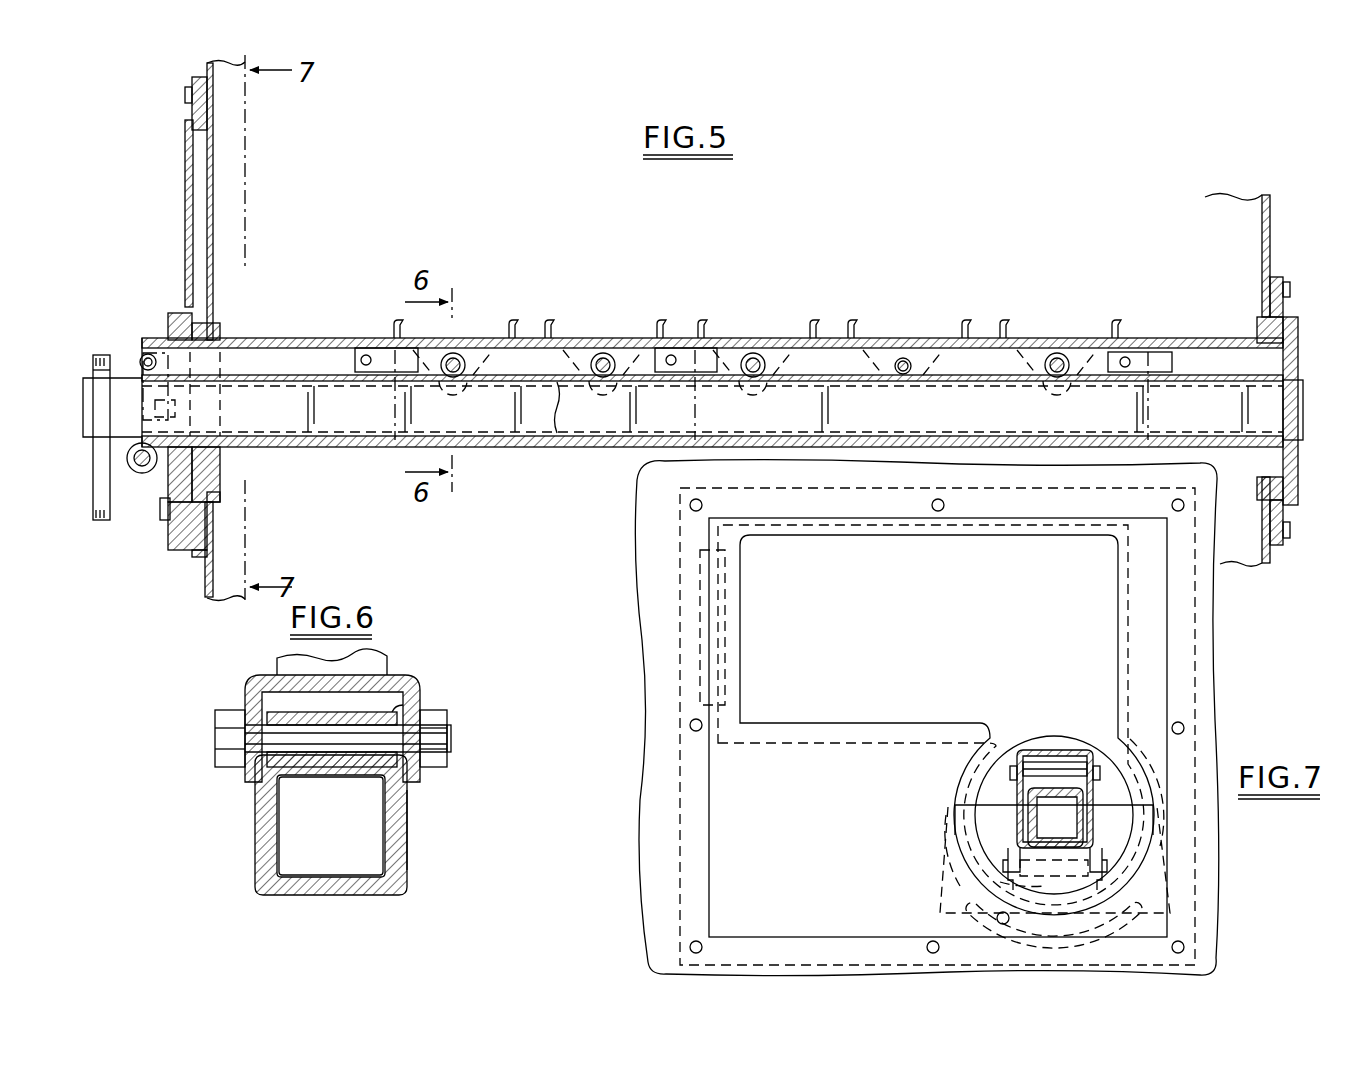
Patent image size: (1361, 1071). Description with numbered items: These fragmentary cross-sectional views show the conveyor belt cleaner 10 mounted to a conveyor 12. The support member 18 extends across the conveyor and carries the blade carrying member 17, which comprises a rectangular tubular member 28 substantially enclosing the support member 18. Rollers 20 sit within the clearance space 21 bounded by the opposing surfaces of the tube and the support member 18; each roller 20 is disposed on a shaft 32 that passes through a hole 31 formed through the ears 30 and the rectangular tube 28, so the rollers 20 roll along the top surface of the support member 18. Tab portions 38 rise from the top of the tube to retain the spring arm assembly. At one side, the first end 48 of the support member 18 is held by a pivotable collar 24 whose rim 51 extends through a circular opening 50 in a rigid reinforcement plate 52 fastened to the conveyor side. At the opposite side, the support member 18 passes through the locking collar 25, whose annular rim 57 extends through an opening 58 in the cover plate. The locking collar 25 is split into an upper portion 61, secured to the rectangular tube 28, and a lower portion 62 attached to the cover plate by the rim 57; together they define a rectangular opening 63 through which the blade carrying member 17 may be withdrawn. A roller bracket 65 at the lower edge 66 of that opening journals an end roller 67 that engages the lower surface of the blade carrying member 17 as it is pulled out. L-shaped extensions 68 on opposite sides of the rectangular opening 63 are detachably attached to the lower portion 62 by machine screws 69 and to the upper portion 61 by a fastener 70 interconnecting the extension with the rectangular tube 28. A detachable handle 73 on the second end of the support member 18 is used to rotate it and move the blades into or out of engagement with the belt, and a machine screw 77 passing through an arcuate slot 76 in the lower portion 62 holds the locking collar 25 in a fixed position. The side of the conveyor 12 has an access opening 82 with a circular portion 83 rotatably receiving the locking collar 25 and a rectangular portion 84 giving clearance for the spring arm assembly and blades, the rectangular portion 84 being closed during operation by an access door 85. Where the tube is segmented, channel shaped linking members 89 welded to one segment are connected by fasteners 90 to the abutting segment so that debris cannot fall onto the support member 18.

In FIG. 5, the conveyor belt cleaner 10 is at (87, 352).
In FIG. 5, the conveyor 12 is at (1272, 242).
In FIG. 5, the blade carrying member 17 is at (1180, 340).
In FIG. 6, the blade carrying member 17 is at (252, 828).
In FIG. 5, the support member 18 is at (300, 380).
In FIG. 6, the support member 18 is at (279, 855).
In FIG. 7, the support member 18 is at (1040, 810).
In FIG. 5, the rollers 20 is at (457, 377).
In FIG. 6, the rollers 20 is at (285, 720).
In FIG. 6, the clearance space 21 is at (398, 692).
In FIG. 5, the pivotable collar 24 is at (1300, 343).
In FIG. 5, the locking collar 25 is at (181, 318).
In FIG. 5, the rectangular tubular member 28 is at (322, 343).
In FIG. 6, the rectangular tubular member 28 is at (408, 833).
In FIG. 7, the rectangular tubular member 28 is at (1088, 805).
In FIG. 5, the ears 30 is at (480, 357).
In FIG. 6, the ears 30 is at (421, 694).
In FIG. 6, the hole 31 is at (445, 755).
In FIG. 5, the shaft 32 is at (607, 360).
In FIG. 6, the shaft 32 is at (448, 738).
In FIG. 5, the tab portions 38 is at (518, 327).
In FIG. 6, the tab portions 38 is at (290, 666).
In FIG. 5, the first end 48 is at (1305, 418).
In FIG. 5, the circular opening 50 is at (1280, 486).
In FIG. 5, the rim 51 is at (1266, 496).
In FIG. 5, the reinforcement plate 52 is at (1280, 547).
In FIG. 5, the annular rim 57 is at (221, 493).
In FIG. 7, the annular rim 57 is at (985, 818).
In FIG. 5, the opening 58 is at (210, 500).
In FIG. 7, the upper portion 61 is at (1128, 768).
In FIG. 7, the lower portion 62 is at (1135, 855).
In FIG. 5, the rectangular opening 63 is at (178, 318).
In FIG. 5, the roller bracket 65 is at (162, 472).
In FIG. 5, the lower edge 66 is at (192, 455).
In FIG. 5, the end roller 67 is at (141, 474).
In FIG. 7, the end roller 67 is at (945, 890).
In FIG. 5, the L-shaped extensions 68 is at (133, 395).
In FIG. 5, the machine screws 69 is at (176, 408).
In FIG. 5, the fastener 70 is at (147, 340).
In FIG. 7, the fastener 70 is at (1052, 766).
In FIG. 5, the detachable handle 73 is at (106, 491).
In FIG. 5, the arcuate slot 76 is at (183, 558).
In FIG. 7, the arcuate slot 76 is at (1000, 897).
In FIG. 5, the machine screw 77 is at (165, 520).
In FIG. 7, the machine screw 77 is at (1001, 924).
In FIG. 7, the access opening 82 is at (845, 718).
In FIG. 7, the circular portion 83 is at (960, 800).
In FIG. 7, the rectangular portion 84 is at (1058, 538).
In FIG. 7, the access door 85 is at (800, 735).
In FIG. 5, the channel shaped linking members 89 is at (686, 358).
In FIG. 5, the fasteners 90 is at (672, 366).